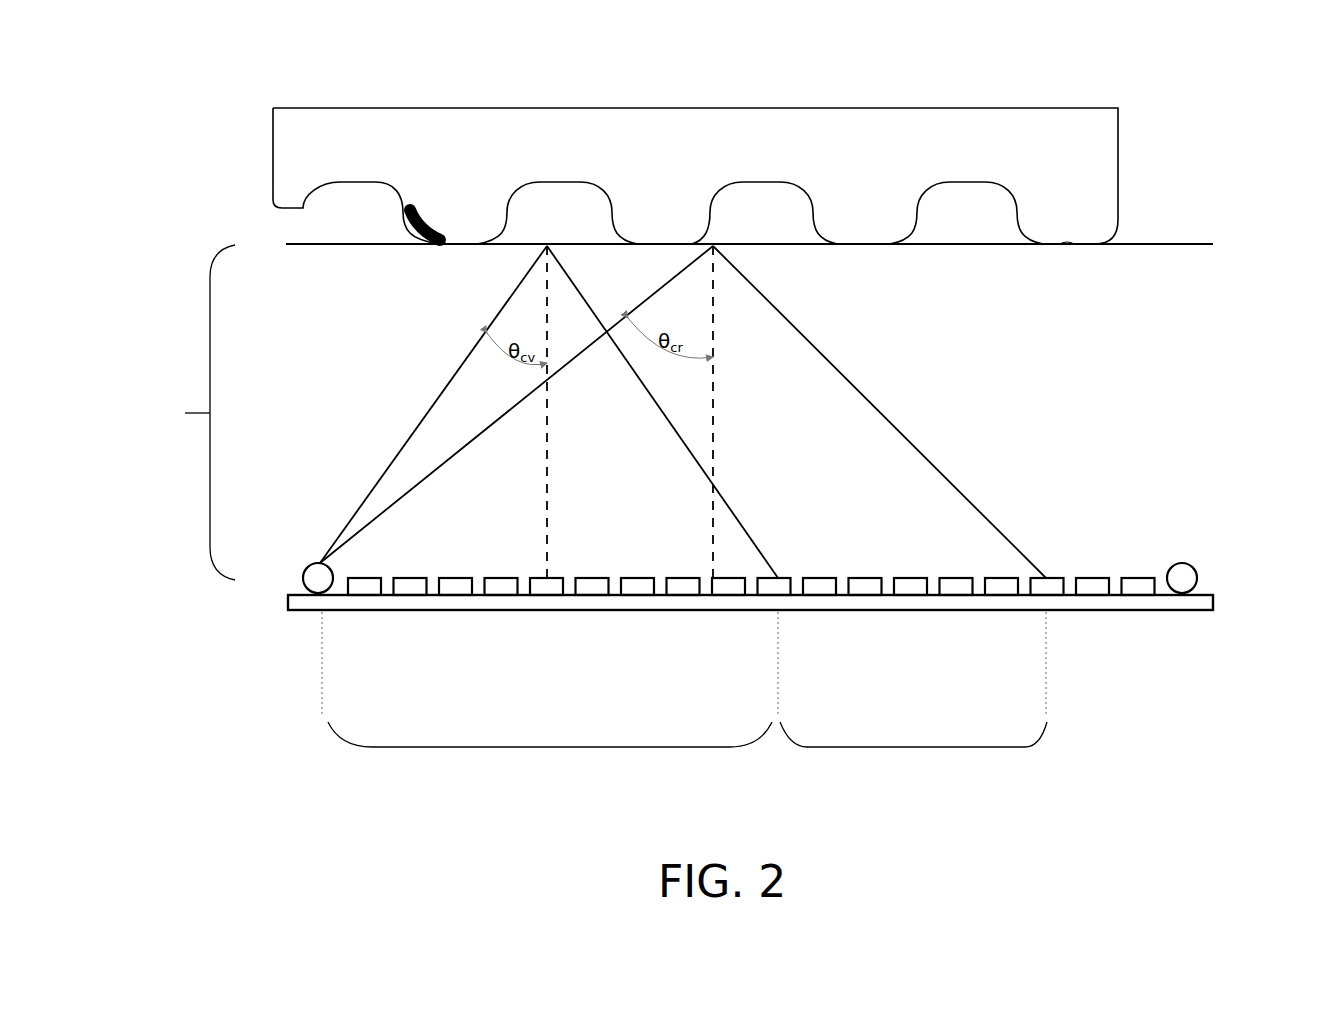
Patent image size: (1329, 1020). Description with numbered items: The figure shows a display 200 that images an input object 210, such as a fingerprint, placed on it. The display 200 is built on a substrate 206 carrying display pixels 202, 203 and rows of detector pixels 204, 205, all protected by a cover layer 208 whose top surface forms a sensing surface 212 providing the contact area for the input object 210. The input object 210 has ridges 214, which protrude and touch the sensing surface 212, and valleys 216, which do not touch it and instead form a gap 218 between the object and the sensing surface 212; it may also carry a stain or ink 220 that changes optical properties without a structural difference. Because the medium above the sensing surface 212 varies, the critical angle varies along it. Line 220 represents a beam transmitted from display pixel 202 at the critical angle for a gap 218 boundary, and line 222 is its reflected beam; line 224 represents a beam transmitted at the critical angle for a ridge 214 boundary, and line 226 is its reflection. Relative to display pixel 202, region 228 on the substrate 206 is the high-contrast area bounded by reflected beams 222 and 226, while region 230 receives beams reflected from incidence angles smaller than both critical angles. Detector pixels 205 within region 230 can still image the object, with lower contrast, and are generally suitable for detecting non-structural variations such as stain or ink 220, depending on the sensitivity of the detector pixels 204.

The display 200 is at (1233, 386).
The display pixel 202 is at (319, 562).
The display pixel 203 is at (1183, 562).
The detector pixels 204 is at (823, 587).
The detector pixels 205 is at (452, 587).
The substrate 206 is at (288, 600).
The cover layer 208 is at (182, 412).
The input object 210 is at (709, 140).
The sensing surface 212 is at (1172, 244).
The ridges 214 is at (856, 242).
The valleys 216 is at (953, 188).
The gap 218 is at (962, 222).
The stain or ink 220 is at (425, 232).
The reflected beam 222 is at (737, 515).
The transmitted beam 224 is at (425, 482).
The reflected beam 226 is at (880, 410).
The region 228 is at (913, 747).
The region 230 is at (550, 747).